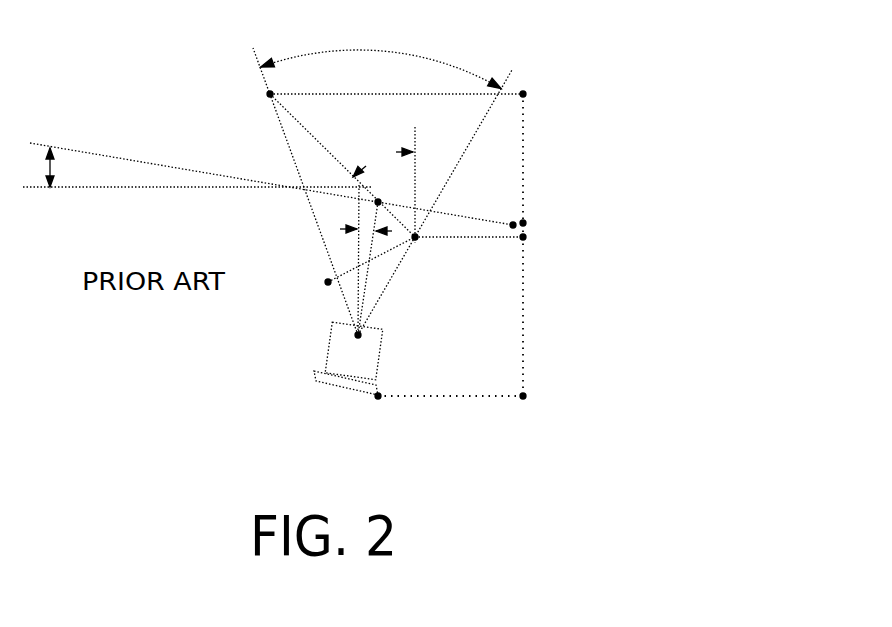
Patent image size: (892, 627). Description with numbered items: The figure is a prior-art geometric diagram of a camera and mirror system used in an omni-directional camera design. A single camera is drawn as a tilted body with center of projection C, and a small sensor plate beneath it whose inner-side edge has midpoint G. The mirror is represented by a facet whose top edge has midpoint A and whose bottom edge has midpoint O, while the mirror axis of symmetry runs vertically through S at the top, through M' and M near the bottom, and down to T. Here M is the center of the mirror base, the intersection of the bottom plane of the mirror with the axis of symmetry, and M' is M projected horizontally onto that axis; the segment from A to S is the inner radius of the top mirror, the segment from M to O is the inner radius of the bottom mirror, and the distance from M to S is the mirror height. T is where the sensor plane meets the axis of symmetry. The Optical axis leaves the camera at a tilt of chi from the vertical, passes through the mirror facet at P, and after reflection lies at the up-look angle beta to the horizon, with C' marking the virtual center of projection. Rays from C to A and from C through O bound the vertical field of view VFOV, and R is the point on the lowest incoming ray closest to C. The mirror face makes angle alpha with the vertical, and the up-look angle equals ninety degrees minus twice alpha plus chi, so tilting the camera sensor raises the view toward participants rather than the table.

The midpoint on top edge of mirror facet A is at (260, 96).
The top point on mirror axis of symmetry S is at (531, 83).
The intersection of optical axis and mirror facet P is at (382, 192).
The midpoint on bottom edge of mirror facet O is at (423, 249).
The point on lowest incoming ray closest to C R is at (314, 290).
The center of projection of camera C is at (348, 358).
The virtual center of projection of camera C' is at (508, 216).
The M horizontally projected on mirror axis of symmetry M' is at (534, 214).
The center of the mirror base M is at (530, 249).
The midpoint on edge of image sensor inner side G is at (449, 412).
The intersection of sensor plane and mirror axis of symmetry T is at (528, 410).
The vertical field of view VFOV is at (381, 55).
The optical axis Optical axis is at (140, 160).